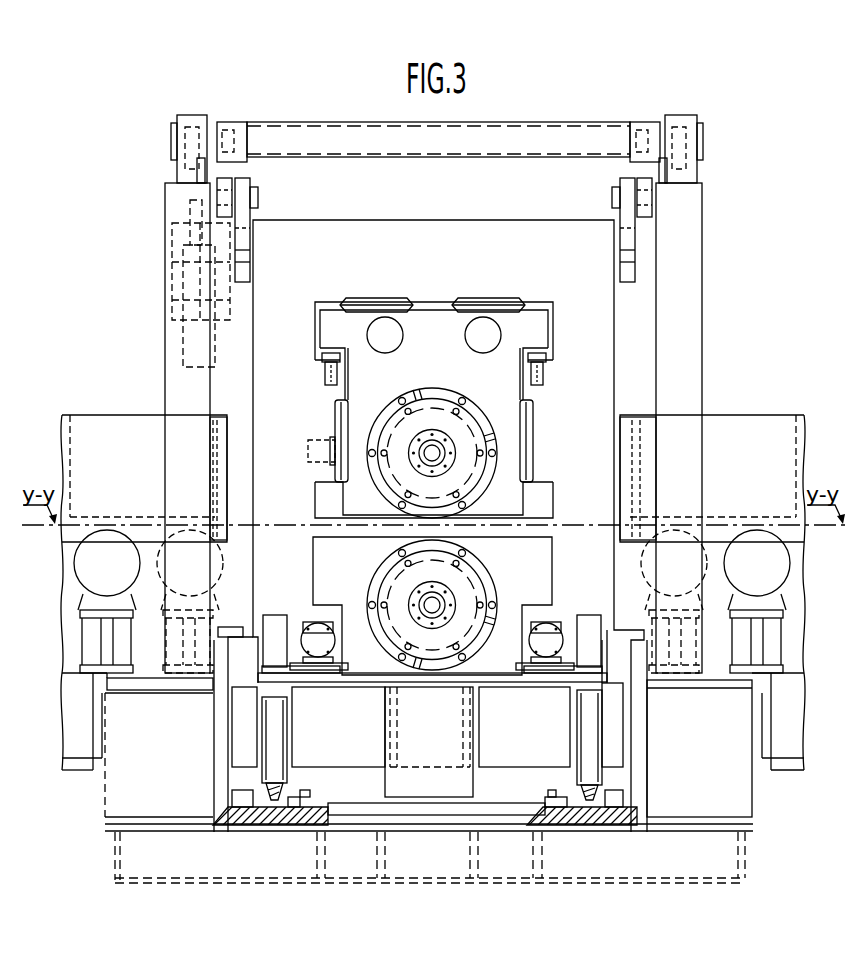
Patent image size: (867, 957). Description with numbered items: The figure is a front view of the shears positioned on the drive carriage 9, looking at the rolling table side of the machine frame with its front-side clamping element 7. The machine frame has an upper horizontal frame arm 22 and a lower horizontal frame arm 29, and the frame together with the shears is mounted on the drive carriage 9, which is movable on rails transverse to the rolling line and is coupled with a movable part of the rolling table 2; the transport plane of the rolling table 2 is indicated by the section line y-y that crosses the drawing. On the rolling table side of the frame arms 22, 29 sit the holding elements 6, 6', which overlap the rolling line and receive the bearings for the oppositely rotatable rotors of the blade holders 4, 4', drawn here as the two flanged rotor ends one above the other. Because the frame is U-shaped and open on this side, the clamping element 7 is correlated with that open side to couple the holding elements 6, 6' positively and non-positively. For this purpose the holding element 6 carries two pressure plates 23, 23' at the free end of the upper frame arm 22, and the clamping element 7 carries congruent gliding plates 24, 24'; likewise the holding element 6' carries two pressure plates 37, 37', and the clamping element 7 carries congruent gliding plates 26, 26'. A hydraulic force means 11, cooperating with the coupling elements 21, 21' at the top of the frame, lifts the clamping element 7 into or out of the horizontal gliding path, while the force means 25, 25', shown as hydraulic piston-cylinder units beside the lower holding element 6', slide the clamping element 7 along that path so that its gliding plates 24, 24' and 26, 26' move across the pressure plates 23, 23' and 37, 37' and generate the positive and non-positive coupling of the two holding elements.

The rolling table 2 is at (682, 548).
The blade holder 4 is at (430, 444).
The blade holder 4' is at (415, 605).
The holding element 6 is at (447, 497).
The holding element 6' is at (509, 588).
The clamping element 7 is at (463, 246).
The drive carriage 9 is at (498, 724).
The hydraulic force means 11 is at (196, 286).
The coupling element 21 is at (273, 228).
The coupling element 21' is at (598, 228).
The upper horizontal frame arm 22 is at (449, 369).
The pressure plate 23 is at (343, 332).
The pressure plate 23' is at (535, 332).
The gliding plate 24 is at (376, 279).
The gliding plate 24' is at (491, 279).
The force means 25 is at (313, 623).
The force means 25' is at (566, 623).
The gliding plate 26 is at (298, 742).
The gliding plate 26' is at (566, 741).
The lower horizontal frame arm 29 is at (450, 606).
The pressure plate 37 is at (316, 700).
The pressure plate 37' is at (542, 713).